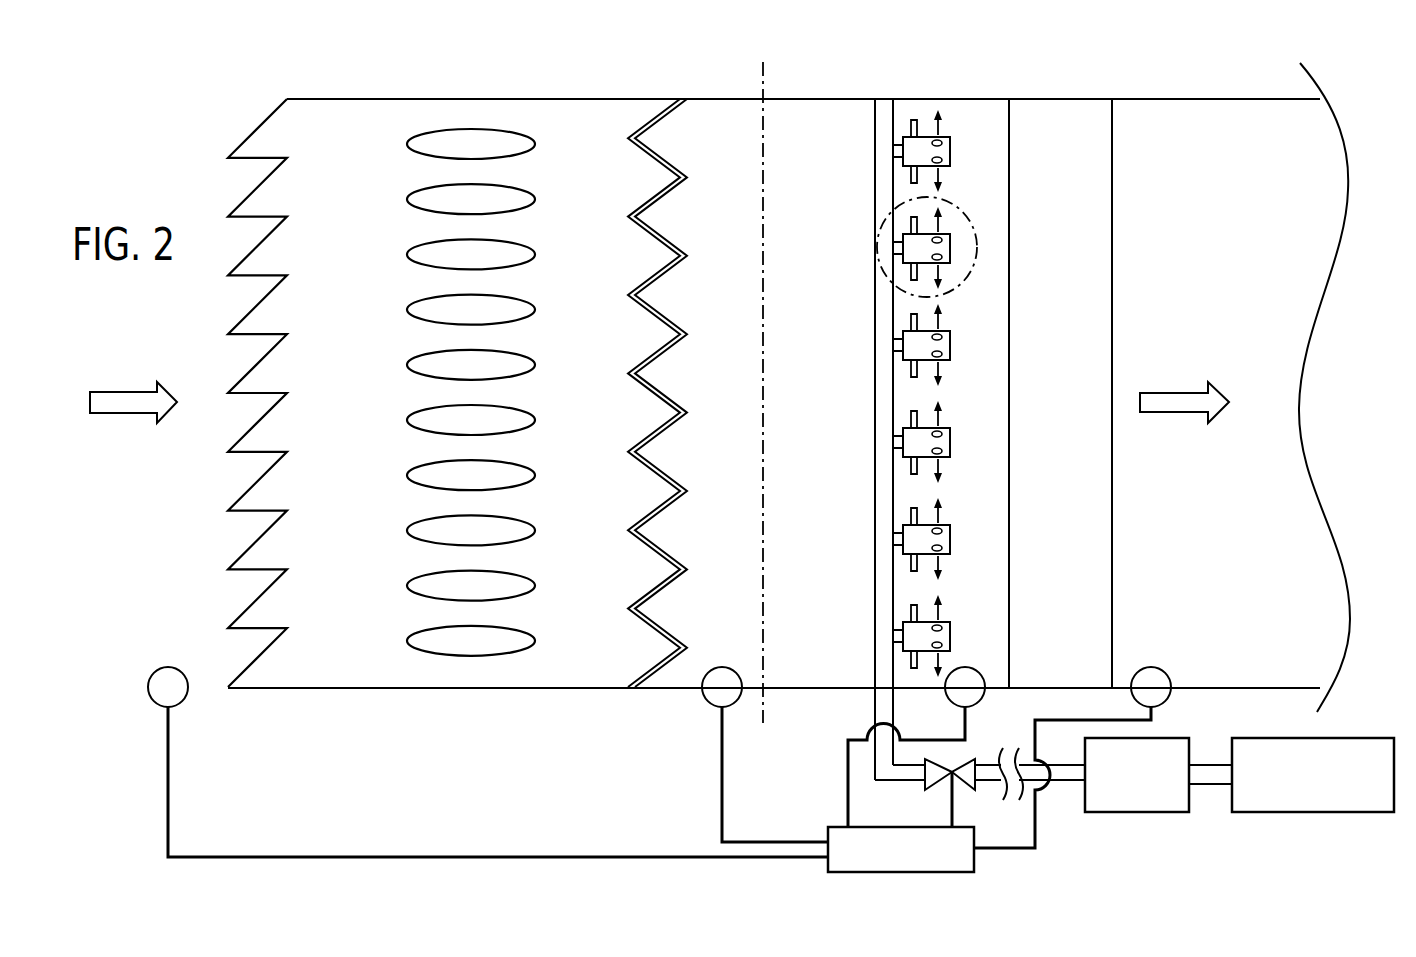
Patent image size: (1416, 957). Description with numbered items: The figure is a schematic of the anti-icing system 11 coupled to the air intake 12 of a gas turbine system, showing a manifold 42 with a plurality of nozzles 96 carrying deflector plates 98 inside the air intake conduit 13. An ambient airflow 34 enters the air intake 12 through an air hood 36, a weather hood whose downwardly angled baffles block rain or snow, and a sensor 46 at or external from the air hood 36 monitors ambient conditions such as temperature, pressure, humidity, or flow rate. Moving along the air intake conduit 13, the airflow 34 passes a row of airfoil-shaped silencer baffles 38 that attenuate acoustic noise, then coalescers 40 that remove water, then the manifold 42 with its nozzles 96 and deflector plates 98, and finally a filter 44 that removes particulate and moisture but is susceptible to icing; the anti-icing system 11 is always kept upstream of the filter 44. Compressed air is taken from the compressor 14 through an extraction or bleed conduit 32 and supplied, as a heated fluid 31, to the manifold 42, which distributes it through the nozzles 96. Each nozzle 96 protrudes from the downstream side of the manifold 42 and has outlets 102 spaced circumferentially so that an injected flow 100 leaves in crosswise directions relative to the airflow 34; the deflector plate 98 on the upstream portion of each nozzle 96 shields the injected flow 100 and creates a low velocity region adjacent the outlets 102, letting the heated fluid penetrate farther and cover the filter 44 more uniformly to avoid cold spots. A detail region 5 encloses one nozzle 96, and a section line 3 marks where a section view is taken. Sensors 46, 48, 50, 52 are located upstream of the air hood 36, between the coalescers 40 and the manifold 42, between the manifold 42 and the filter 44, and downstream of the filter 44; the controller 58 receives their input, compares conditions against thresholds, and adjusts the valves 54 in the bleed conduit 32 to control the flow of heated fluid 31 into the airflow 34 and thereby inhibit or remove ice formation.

The anti-icing system 11 is at (232, 83).
The air intake conduit 13 is at (385, 97).
The air hood 36 is at (236, 148).
The silencer baffles 38 is at (471, 127).
The coalescers 40 is at (633, 125).
The section line 3 is at (763, 62).
The manifold 42 is at (867, 84).
The nozzles 96 is at (959, 153).
The deflector plates 98 is at (908, 128).
The outlets 102 is at (951, 152).
The injected flow 100 is at (943, 130).
The detail region 5 is at (955, 200).
The filter 44 is at (1080, 98).
The air intake 12 is at (1025, 70).
The airflow 34 is at (122, 392).
The sensor 46 is at (186, 702).
The sensor 48 is at (704, 702).
The sensor 50 is at (987, 700).
The sensor 52 is at (1169, 703).
The extraction or bleed conduit 32 is at (913, 786).
The valves 54 is at (955, 782).
The controller 58 is at (974, 860).
The heated fluid 31 is at (1138, 812).
The compressor 14 is at (1303, 812).